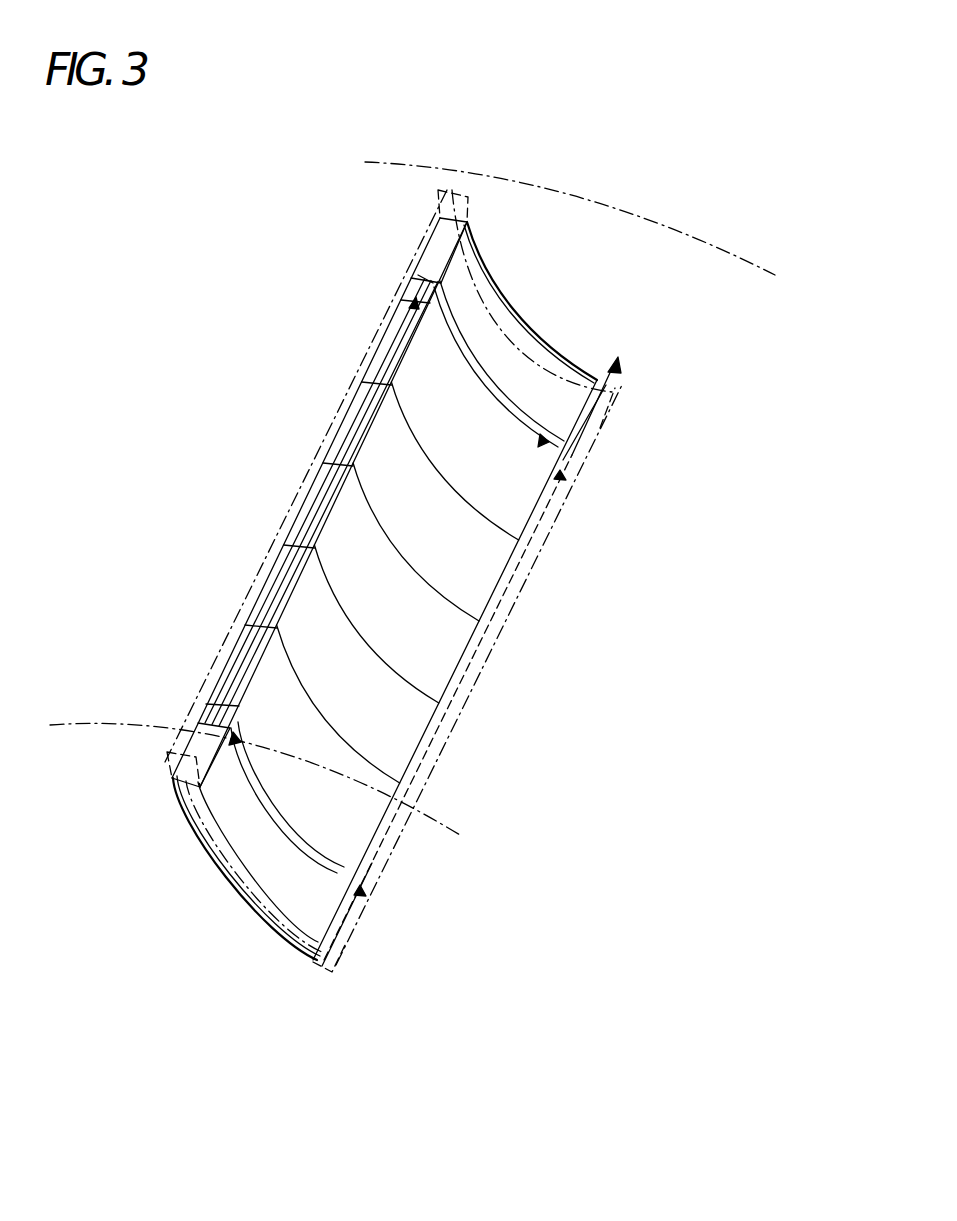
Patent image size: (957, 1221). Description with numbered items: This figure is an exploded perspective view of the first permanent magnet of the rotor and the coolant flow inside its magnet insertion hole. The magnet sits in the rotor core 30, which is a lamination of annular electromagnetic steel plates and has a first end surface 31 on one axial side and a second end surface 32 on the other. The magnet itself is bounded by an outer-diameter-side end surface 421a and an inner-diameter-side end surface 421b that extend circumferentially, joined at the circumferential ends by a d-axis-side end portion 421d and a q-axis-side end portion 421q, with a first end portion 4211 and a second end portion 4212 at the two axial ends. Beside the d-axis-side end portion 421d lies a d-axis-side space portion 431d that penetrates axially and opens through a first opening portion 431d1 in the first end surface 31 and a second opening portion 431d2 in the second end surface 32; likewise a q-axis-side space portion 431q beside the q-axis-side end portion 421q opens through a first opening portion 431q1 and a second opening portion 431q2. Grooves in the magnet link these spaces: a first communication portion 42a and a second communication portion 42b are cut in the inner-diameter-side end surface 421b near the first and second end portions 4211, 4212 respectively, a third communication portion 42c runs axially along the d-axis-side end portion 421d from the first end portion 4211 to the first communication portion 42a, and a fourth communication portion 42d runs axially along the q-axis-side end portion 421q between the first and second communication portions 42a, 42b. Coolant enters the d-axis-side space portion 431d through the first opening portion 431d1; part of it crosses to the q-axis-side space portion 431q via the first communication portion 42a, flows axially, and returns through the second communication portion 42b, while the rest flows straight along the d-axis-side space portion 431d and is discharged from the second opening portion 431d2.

The rotor core 30 is at (272, 330).
The first end surface 31 is at (76, 722).
The second end surface 32 is at (607, 212).
The first communication portion 42a is at (267, 813).
The second communication portion 42b is at (498, 378).
The third communication portion 42c is at (340, 906).
The fourth communication portion 42d is at (327, 467).
The outer-diameter-side end surface 421a is at (233, 900).
The inner-diameter-side end surface 421b is at (462, 556).
The d-axis-side end portion 421d is at (487, 613).
The q-axis-side end portion 421q is at (438, 246).
The first end portion 4211 is at (205, 833).
The second end portion 4212 is at (517, 307).
The d-axis-side space portion 431d is at (485, 653).
The first opening portion 431d1 is at (330, 978).
The second opening portion 431d2 is at (614, 388).
The q-axis-side space portion 431q is at (325, 430).
The first opening portion 431q1 is at (168, 776).
The second opening portion 431q2 is at (462, 190).